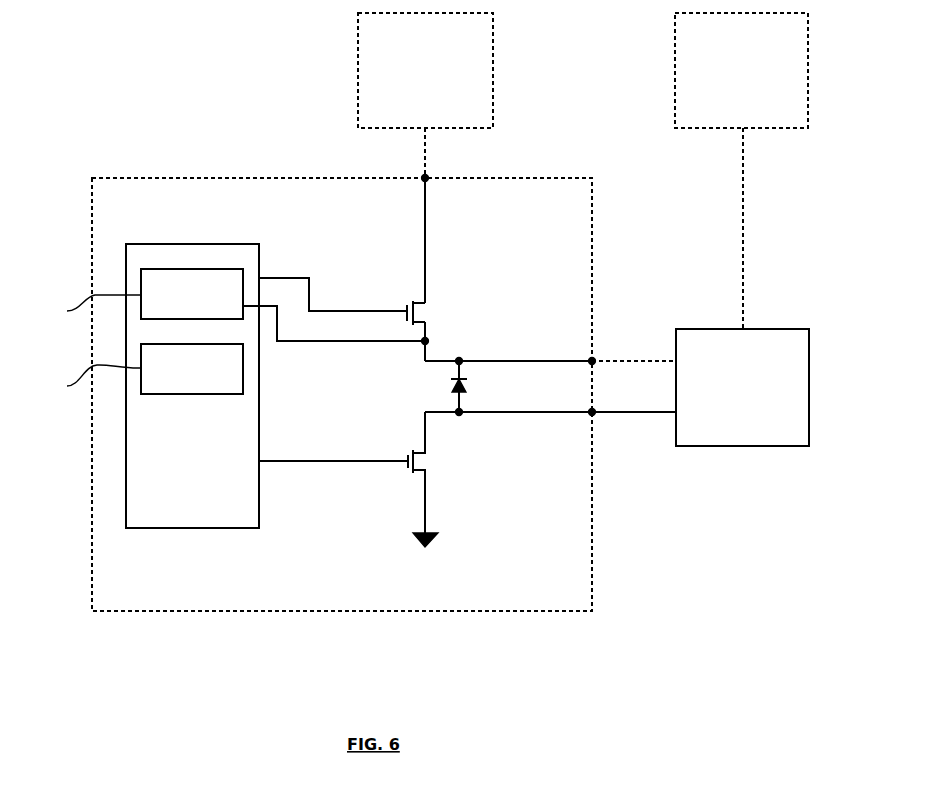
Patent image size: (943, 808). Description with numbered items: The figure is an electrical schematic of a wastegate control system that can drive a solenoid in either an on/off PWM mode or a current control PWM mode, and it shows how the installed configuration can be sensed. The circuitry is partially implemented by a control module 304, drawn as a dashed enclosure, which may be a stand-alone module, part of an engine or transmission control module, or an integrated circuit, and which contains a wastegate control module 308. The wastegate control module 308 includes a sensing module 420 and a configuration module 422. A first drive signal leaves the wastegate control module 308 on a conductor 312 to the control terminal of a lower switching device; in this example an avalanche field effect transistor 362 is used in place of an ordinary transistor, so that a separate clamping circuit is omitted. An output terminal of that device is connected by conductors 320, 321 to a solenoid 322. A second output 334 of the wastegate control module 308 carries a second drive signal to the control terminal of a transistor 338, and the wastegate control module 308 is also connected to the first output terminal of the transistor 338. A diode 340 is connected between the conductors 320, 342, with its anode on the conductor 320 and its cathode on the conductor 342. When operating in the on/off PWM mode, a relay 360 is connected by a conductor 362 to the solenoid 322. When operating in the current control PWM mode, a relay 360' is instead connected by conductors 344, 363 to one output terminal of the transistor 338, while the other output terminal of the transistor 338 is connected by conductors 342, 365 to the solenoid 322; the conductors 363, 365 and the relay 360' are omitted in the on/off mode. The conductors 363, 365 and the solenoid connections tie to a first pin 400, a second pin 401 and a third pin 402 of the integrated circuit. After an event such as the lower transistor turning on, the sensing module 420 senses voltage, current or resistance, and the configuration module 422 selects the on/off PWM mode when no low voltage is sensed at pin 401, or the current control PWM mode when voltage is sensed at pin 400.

The control module 304 is at (162, 178).
The wastegate control module 308 is at (190, 244).
The conductor 312 is at (362, 461).
The conductor 320 is at (552, 412).
The conductor 321 is at (608, 412).
The solenoid 322 is at (745, 446).
The second output 334 is at (318, 311).
The transistor 338 is at (452, 307).
The diode 340 is at (470, 387).
The conductor 342 is at (505, 361).
The conductor 344 is at (426, 260).
The relay 360 is at (764, 93).
The relay 360' is at (457, 70).
The avalanche field effect transistor / conductor 362 is at (396, 495).
The conductor 363 is at (425, 165).
The conductor 365 is at (620, 360).
The first pin 400 is at (428, 181).
The second pin 401 is at (592, 364).
The third pin 402 is at (594, 415).
The sensing module 420 is at (137, 295).
The configuration module 422 is at (137, 370).